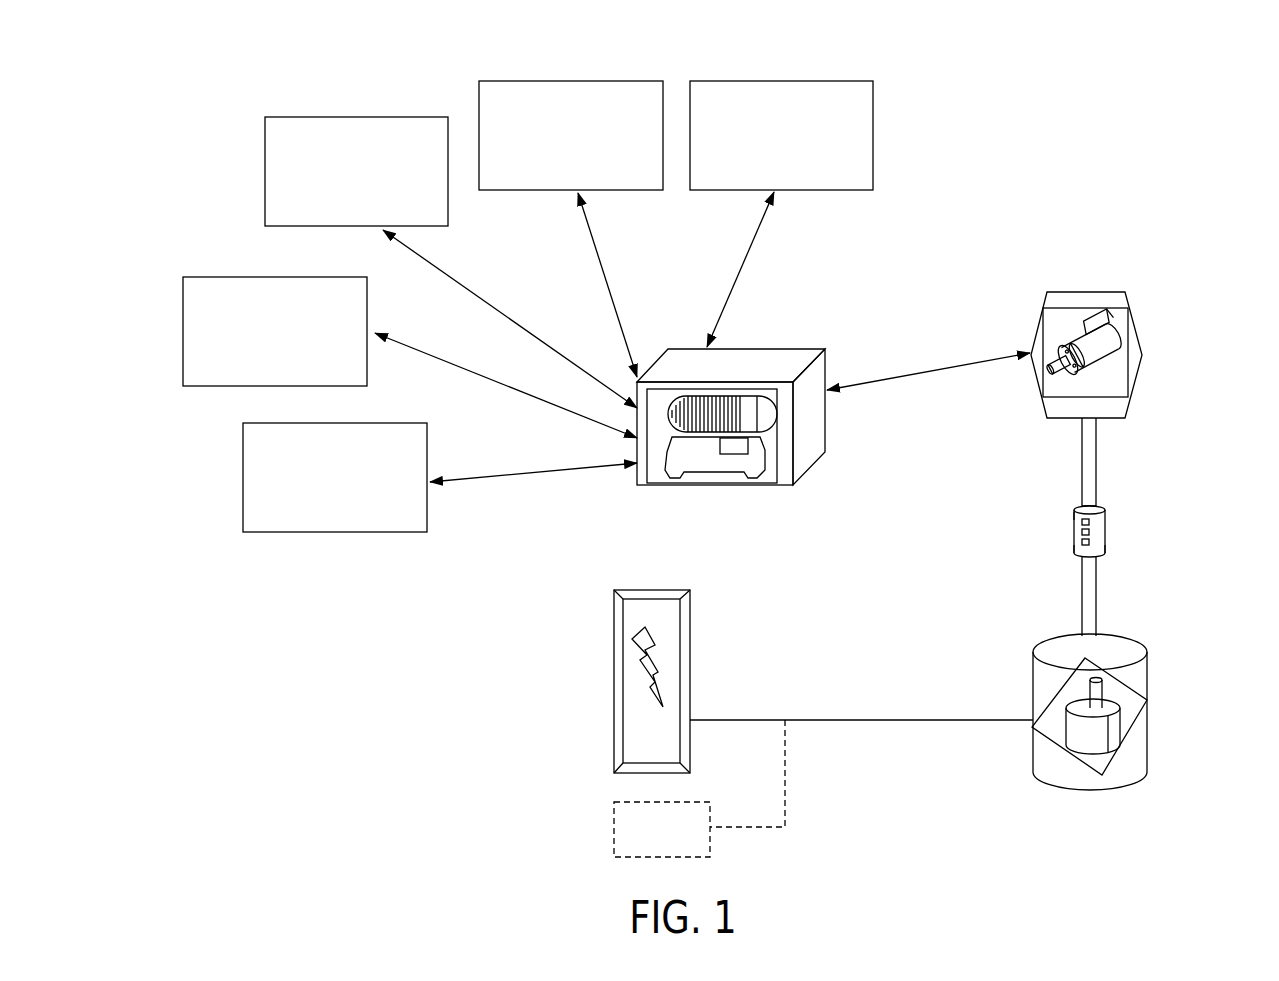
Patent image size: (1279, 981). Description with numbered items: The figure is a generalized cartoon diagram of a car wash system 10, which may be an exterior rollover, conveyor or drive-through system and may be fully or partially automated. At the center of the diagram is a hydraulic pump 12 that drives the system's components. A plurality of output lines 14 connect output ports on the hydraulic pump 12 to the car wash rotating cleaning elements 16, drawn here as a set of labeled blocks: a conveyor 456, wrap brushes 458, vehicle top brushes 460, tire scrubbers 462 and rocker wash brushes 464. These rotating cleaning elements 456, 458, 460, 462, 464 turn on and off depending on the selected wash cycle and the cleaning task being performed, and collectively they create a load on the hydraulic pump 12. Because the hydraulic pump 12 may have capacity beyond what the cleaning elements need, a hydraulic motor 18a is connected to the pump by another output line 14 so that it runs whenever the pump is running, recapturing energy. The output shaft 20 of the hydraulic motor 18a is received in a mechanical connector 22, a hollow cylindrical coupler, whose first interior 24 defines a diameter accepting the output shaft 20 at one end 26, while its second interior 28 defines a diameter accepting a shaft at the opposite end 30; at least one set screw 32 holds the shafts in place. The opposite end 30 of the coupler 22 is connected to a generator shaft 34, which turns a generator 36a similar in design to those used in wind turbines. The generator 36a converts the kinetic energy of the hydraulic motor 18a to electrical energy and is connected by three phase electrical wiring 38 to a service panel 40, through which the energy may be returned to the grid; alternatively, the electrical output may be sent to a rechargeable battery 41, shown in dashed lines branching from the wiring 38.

The car wash system 10 is at (1183, 160).
The hydraulic pump 12 is at (777, 360).
The output lines 14 is at (485, 305).
The car wash rotating cleaning elements 16 is at (153, 128).
The hydraulic motor 18a is at (1145, 355).
The output shaft 20 is at (1088, 465).
The mechanical connector 22 is at (1100, 525).
The first interior 24 is at (1098, 507).
The one end 26 is at (1073, 508).
The second interior 28 is at (1105, 550).
The opposite end 30 is at (1073, 552).
The set screw 32 is at (1080, 530).
The generator shaft 34 is at (1090, 610).
The generator 36a is at (1147, 700).
The three phase electrical wiring 38 is at (866, 738).
The service panel 40 is at (638, 724).
The rechargeable battery 41 is at (612, 838).
The conveyor 456 is at (265, 178).
The wrap brushes 458 is at (568, 81).
The vehicle top brushes 460 is at (243, 480).
The tire scrubbers 462 is at (183, 340).
The rocker wash brushes 464 is at (875, 136).